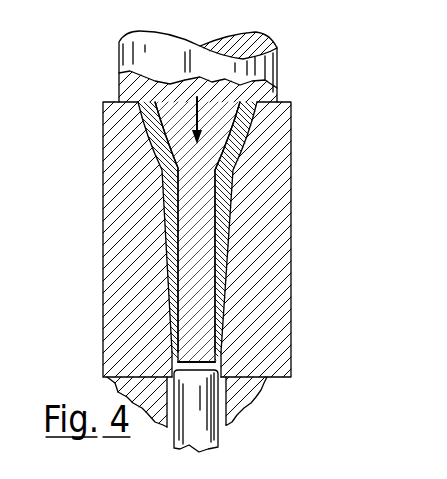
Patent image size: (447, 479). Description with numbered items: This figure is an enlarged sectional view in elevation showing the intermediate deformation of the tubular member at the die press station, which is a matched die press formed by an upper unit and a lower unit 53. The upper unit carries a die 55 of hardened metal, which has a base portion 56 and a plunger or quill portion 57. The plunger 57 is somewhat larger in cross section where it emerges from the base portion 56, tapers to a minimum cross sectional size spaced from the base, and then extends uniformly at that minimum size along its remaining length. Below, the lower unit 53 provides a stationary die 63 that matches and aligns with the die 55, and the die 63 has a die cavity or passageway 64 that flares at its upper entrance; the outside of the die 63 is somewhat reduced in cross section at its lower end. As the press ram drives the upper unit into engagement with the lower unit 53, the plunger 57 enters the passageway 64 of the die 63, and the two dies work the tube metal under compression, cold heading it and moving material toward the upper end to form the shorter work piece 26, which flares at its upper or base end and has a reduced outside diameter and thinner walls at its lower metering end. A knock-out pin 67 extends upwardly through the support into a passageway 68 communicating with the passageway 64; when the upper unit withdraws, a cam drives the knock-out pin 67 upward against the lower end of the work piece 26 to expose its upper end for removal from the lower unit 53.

The die 55 is at (119, 55).
The base portion 56 is at (278, 68).
The die 63 is at (291, 128).
The die cavity or passageway 64 is at (228, 194).
The work piece 26 is at (226, 230).
The plunger or quill portion 57 is at (196, 250).
The lower unit 53 is at (267, 388).
The passageway 68 is at (216, 393).
The knock-out pin 67 is at (218, 436).